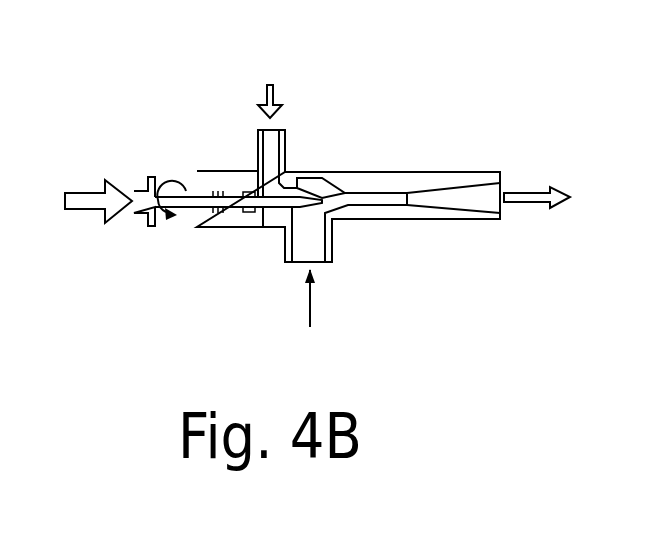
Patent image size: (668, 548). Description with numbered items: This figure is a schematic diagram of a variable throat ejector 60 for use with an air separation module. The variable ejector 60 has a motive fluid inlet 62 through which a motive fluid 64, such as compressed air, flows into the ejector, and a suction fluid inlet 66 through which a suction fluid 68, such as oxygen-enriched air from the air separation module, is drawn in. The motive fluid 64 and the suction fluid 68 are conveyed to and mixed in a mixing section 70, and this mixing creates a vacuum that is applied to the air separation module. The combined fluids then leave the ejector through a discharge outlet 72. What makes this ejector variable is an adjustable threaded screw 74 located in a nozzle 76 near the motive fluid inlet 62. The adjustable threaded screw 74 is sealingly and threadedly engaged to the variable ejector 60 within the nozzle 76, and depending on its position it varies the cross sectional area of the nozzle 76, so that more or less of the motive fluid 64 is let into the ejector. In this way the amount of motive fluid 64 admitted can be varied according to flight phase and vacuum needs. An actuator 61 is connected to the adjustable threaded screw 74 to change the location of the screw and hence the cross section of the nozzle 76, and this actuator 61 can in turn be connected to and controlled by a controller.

The variable throat ejector 60 is at (568, 127).
The actuator 61 is at (108, 201).
The motive fluid inlet 62 is at (269, 88).
The motive fluid 64 is at (272, 138).
The suction fluid inlet 66 is at (309, 312).
The suction fluid 68 is at (312, 243).
The mixing section 70 is at (343, 182).
The discharge outlet 72 is at (550, 198).
The adjustable threaded screw 74 is at (203, 198).
The nozzle 76 is at (281, 205).